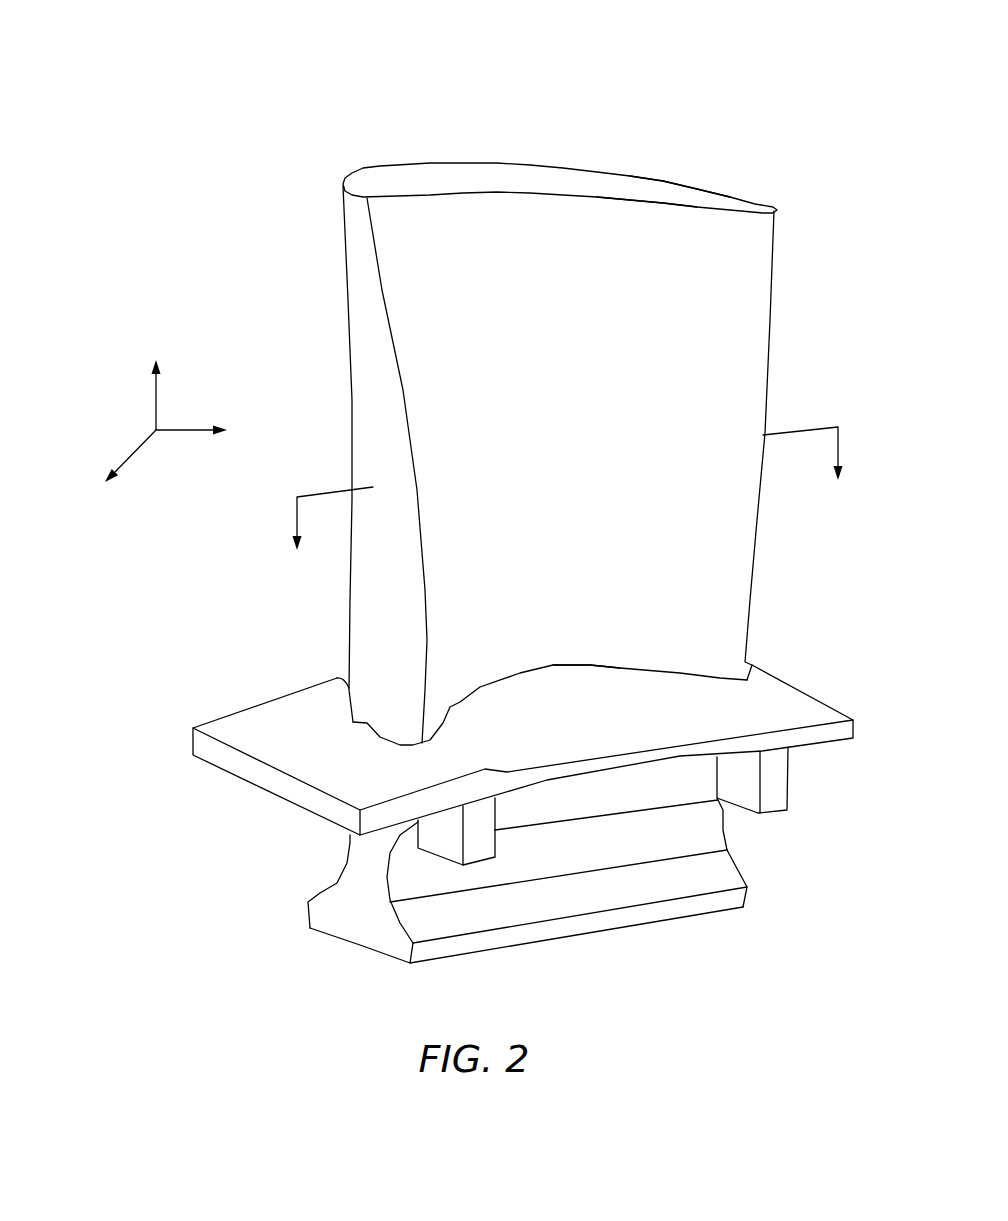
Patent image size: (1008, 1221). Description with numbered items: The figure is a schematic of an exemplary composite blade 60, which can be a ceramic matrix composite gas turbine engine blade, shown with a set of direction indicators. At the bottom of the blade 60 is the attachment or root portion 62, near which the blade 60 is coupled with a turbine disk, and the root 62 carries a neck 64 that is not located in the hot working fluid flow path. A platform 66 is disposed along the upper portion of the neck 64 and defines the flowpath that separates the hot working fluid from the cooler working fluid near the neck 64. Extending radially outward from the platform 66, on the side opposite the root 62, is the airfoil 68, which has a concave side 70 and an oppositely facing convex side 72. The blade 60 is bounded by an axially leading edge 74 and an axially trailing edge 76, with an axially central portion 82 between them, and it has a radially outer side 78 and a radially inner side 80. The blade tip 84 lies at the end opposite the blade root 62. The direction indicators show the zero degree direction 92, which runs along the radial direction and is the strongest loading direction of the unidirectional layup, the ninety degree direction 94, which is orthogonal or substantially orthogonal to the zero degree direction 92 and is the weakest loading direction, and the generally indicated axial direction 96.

The blade 60 is at (255, 106).
The root portion 62 is at (329, 962).
The neck 64 is at (324, 851).
The platform 66 is at (162, 727).
The airfoil 68 is at (533, 410).
The concave side 70 is at (652, 278).
The convex side 72 is at (473, 114).
The axially leading edge 74 is at (322, 370).
The axially trailing edge 76 is at (795, 310).
The radially outer side 78 is at (665, 160).
The radially inner side 80 is at (655, 658).
The axially central portion 82 is at (572, 581).
The blade tip 84 is at (390, 167).
The zero degree direction 92 is at (157, 397).
The 90 degree direction 94 is at (128, 452).
The axial direction 96 is at (190, 432).